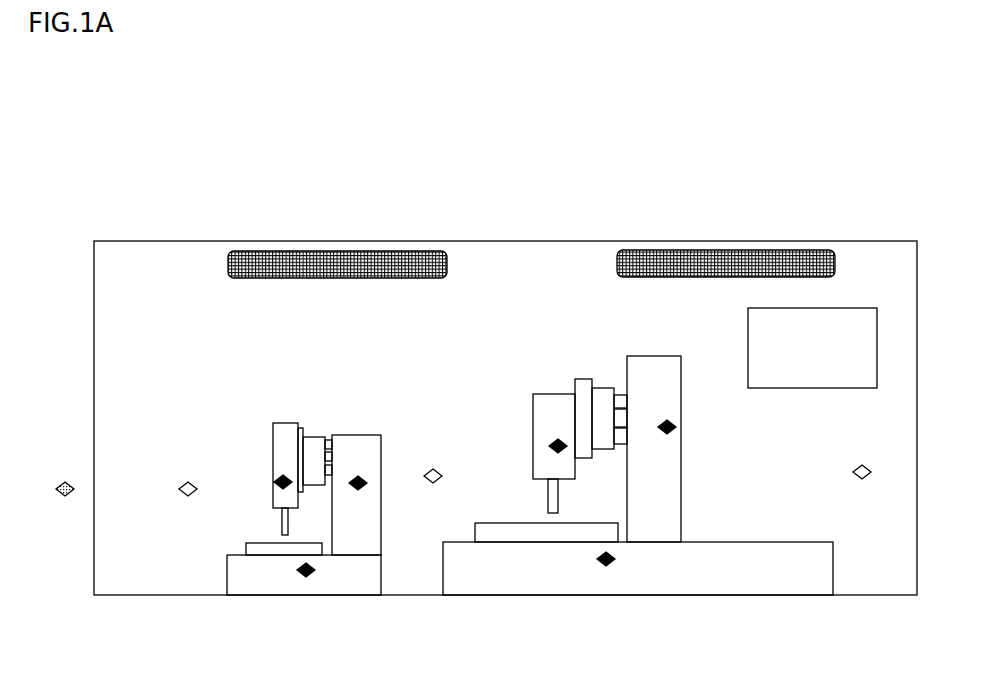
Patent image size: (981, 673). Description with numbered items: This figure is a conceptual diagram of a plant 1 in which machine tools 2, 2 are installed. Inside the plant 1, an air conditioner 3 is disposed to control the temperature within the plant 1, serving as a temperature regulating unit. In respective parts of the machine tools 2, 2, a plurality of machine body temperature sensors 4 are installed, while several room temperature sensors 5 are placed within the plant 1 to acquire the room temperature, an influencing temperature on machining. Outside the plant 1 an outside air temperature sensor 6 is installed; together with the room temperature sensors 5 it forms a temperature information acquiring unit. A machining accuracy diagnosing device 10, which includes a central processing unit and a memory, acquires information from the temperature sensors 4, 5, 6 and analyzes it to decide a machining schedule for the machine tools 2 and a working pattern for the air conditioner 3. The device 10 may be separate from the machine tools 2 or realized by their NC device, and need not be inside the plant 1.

The plant 1 is at (150, 256).
The machine tool 2 is at (244, 583).
The air conditioner 3 is at (390, 262).
The machine body temperature sensor 4 is at (285, 486).
The room temperature sensor 5 is at (186, 480).
The outside air temperature sensor 6 is at (66, 480).
The machining accuracy diagnosing device 10 is at (856, 308).